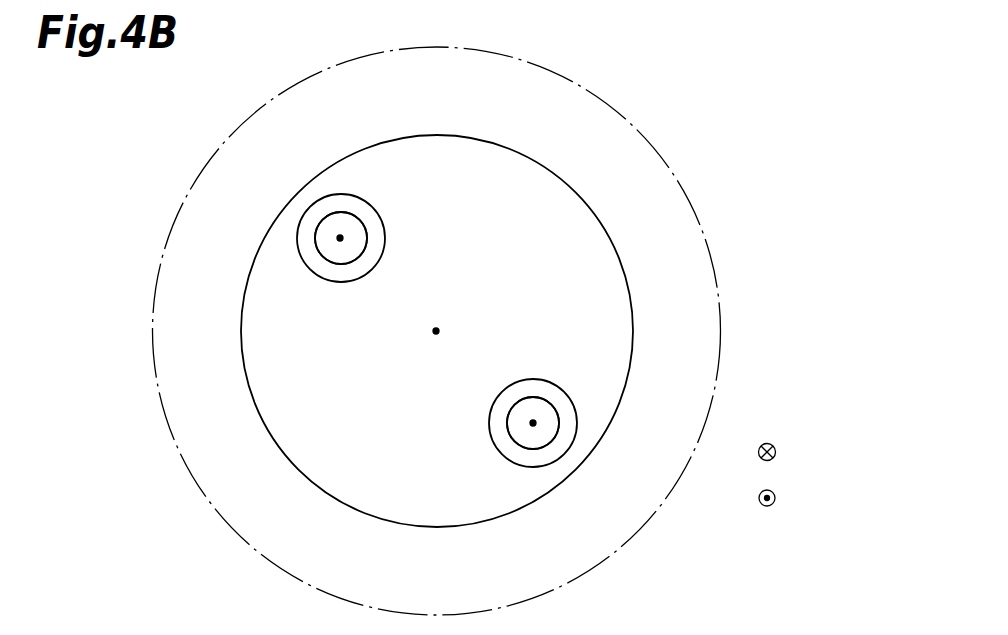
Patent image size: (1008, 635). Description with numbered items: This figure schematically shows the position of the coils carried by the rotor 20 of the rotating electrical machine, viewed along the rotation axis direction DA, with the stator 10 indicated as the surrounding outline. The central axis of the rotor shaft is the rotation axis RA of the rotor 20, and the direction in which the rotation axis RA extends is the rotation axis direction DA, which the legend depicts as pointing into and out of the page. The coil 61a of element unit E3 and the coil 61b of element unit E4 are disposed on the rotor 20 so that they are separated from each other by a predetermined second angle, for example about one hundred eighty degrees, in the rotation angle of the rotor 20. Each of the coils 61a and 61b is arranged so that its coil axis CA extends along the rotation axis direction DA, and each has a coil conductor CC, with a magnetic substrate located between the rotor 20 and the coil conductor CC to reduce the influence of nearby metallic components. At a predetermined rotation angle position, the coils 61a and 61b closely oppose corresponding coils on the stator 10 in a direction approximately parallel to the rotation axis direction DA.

The stator 10 is at (672, 172).
The rotor 20 is at (632, 312).
The coil 61a is at (557, 463).
The coil 61b is at (313, 200).
The coil conductor CC is at (366, 248).
The coil axis CA is at (338, 251).
The rotation axis RA is at (426, 344).
The rotation axis direction DA is at (777, 455).